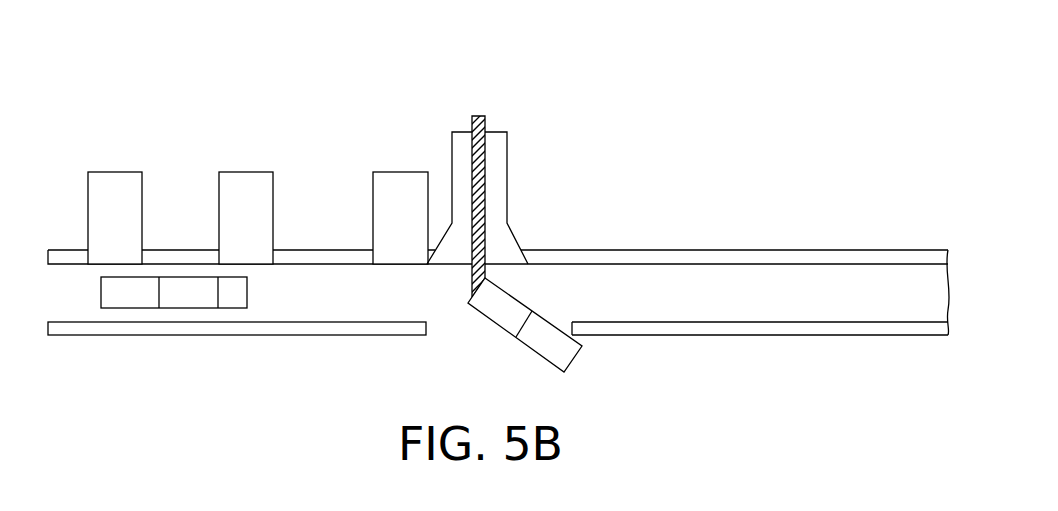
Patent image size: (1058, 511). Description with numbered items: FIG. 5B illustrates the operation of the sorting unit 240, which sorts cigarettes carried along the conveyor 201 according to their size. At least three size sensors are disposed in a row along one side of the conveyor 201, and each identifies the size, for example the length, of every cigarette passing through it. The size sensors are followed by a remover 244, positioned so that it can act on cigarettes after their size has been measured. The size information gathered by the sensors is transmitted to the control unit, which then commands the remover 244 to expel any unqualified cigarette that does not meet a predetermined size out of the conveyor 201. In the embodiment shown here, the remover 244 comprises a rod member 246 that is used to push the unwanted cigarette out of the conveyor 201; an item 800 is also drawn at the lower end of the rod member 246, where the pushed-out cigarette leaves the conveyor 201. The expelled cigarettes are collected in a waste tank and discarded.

The conveyor 201 is at (838, 258).
The sorting unit 240 is at (518, 62).
The remover 244 is at (495, 145).
The rod member 246 is at (483, 193).
The connector 800 is at (497, 312).